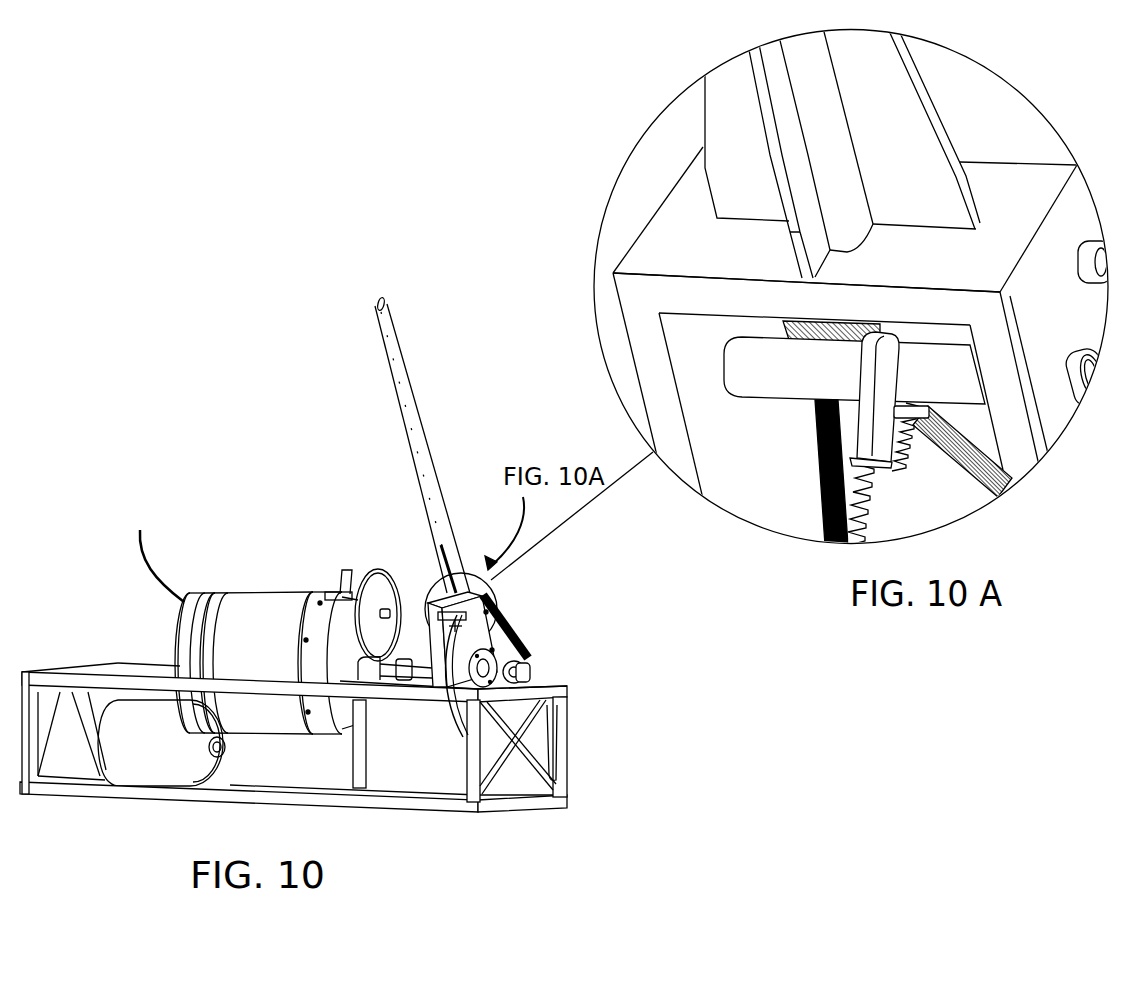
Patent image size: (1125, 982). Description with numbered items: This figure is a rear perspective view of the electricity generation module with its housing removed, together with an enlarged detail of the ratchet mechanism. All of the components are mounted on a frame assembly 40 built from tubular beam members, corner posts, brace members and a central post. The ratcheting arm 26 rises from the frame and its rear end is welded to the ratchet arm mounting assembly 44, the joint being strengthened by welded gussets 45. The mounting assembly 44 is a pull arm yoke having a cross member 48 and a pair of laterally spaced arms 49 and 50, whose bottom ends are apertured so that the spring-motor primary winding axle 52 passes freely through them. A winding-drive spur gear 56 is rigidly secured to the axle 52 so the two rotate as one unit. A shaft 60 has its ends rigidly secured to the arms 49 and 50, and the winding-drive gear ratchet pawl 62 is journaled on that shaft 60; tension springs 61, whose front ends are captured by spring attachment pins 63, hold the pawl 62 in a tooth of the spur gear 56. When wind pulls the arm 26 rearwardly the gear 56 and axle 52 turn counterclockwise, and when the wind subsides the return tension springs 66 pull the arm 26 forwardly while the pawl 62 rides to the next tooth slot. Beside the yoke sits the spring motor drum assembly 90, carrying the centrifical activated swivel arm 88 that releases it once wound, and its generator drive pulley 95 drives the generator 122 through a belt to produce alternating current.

In FIG. 10, the ratcheting arm 26 is at (415, 427).
In FIG. 10A, the ratcheting arm 26 is at (830, 118).
In FIG. 10, the frame assembly 40 is at (573, 763).
In FIG. 10A, the ratchet arm mounting assembly 44 is at (652, 222).
In FIG. 10A, the welded gussets 45 is at (747, 160).
In FIG. 10A, the cross member 48 is at (947, 277).
In FIG. 10A, the arm 49 is at (1062, 330).
In FIG. 10A, the arm 50 is at (778, 524).
In FIG. 10, the spring-motor primary winding axle 52 is at (530, 675).
In FIG. 10, the winding-drive spur gear 56 is at (463, 712).
In FIG. 10A, the winding-drive spur gear 56 is at (907, 532).
In FIG. 10A, the shaft 60 is at (778, 383).
In FIG. 10A, the tension springs 61 is at (815, 454).
In FIG. 10A, the winding-drive gear ratchet pawl 62 is at (883, 394).
In FIG. 10A, the spring attachment pins 63 is at (907, 411).
In FIG. 10, the ratcheting arm return tension springs 66 is at (520, 638).
In FIG. 10, the centrifical activated swivel arm 88 is at (350, 574).
In FIG. 10, the spring motor drum assembly 90 is at (272, 593).
In FIG. 10, the generator drive pulley 95 is at (152, 551).
In FIG. 10, the generator 122 is at (165, 757).